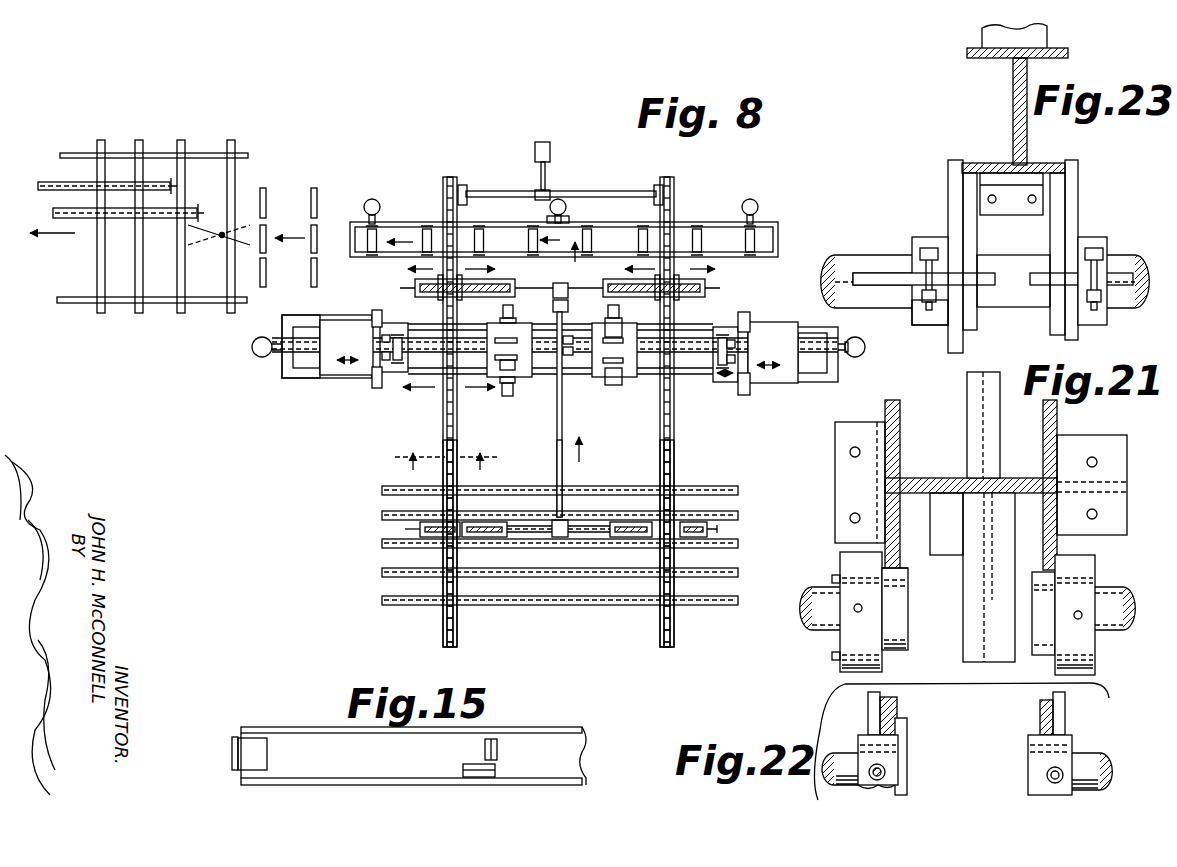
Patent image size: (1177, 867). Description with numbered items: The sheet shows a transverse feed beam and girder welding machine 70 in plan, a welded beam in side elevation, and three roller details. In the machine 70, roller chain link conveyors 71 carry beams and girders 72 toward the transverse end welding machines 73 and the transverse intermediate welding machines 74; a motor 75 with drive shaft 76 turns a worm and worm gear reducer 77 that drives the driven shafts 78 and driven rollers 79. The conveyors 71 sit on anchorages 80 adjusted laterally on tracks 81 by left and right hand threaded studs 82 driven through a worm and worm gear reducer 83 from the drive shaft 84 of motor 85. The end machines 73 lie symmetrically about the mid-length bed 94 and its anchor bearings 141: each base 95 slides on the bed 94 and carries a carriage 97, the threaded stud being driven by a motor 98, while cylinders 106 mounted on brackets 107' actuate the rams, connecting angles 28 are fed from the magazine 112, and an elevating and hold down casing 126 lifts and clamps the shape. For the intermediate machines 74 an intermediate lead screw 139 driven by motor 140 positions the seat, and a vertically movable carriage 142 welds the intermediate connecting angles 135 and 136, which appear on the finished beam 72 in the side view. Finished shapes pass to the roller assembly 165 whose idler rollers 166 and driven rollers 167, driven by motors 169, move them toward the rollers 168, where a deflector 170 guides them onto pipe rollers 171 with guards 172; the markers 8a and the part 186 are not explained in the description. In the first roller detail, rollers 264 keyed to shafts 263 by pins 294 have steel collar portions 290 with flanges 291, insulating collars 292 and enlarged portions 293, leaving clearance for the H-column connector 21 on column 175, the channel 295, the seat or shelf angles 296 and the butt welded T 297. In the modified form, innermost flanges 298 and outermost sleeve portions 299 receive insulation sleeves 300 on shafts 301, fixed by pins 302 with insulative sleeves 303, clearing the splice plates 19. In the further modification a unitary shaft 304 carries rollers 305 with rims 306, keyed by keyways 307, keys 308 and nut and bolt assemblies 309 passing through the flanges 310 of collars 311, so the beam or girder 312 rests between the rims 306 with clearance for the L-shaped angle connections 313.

In FIG. 8, the section line 8a is at (446, 468).
In FIG. 22, the splice plates 19 is at (870, 710).
In FIG. 21, the wide flange H-column connector 21 is at (938, 518).
In FIG. 15, the connecting angle 28 is at (250, 745).
In FIG. 8, the transverse feed beam and girder welding machine 70 is at (690, 172).
In FIG. 8, the roller chain link conveyors 71 is at (444, 623).
In FIG. 8, the beams and girders 72 is at (560, 578).
In FIG. 15, the beams and girders 72 is at (295, 740).
In FIG. 8, the transverse end welding machines 73 is at (322, 390).
In FIG. 8, the transverse intermediate welding machines 74 is at (645, 320).
In FIG. 8, the motor 75 is at (550, 145).
In FIG. 8, the drive shaft 76 is at (546, 180).
In FIG. 8, the worm and worm gear reducer 77 is at (552, 197).
In FIG. 8, the driven shafts 78 is at (485, 191).
In FIG. 8, the driven rollers 79 is at (458, 178).
In FIG. 8, the anchorages 80 is at (437, 302).
In FIG. 8, the tracks 81 is at (500, 288).
In FIG. 8, the left and right hand threaded studs 82 is at (535, 537).
In FIG. 8, the worm and worm gear reducer 83 is at (568, 290).
In FIG. 8, the drive shaft 84 is at (557, 465).
In FIG. 8, the motor 85 is at (570, 306).
In FIG. 8, the mid-length bed 94 is at (300, 378).
In FIG. 8, the base 95 is at (332, 376).
In FIG. 8, the carriage 97 is at (342, 334).
In FIG. 8, the motor 98 is at (262, 357).
In FIG. 8, the cylinders 106 is at (398, 337).
In FIG. 8, the bracket 107' is at (569, 377).
In FIG. 8, the magazine 112 is at (385, 378).
In FIG. 8, the elevating and hold down casing 126 is at (408, 378).
In FIG. 15, the connecting angle 135 is at (500, 750).
In FIG. 15, the connecting angle 136 is at (480, 777).
In FIG. 8, the intermediate lead screw 139 is at (841, 335).
In FIG. 8, the motor 140 is at (862, 348).
In FIG. 8, the anchor bearings 141 is at (567, 356).
In FIG. 8, the carriage 142 is at (503, 396).
In FIG. 8, the roller assembly 165 is at (690, 212).
In FIG. 8, the idler rollers 166 is at (481, 240).
In FIG. 8, the driven rollers 167 is at (383, 235).
In FIG. 8, the rollers 168 is at (268, 195).
In FIG. 8, the motors 169 is at (374, 199).
In FIG. 8, the deflector 170 is at (218, 230).
In FIG. 8, the pipe rollers 171 is at (181, 314).
In FIG. 8, the guards 172 is at (72, 152).
In FIG. 21, the column 175 is at (1058, 412).
In FIG. 22, the column 175 is at (900, 712).
In FIG. 8, the nut 186 is at (722, 358).
In FIG. 21, the shafts 263 is at (812, 590).
In FIG. 21, the rollers 264 is at (898, 627).
In FIG. 21, the collar portions 290 is at (905, 598).
In FIG. 21, the flanges 291 is at (895, 563).
In FIG. 21, the collars 292 is at (898, 652).
In FIG. 21, the enlarged portions 293 is at (840, 655).
In FIG. 21, the pins 294 is at (854, 608).
In FIG. 21, the channel 295 is at (998, 372).
In FIG. 21, the seat or shelf angles 296 is at (840, 508).
In FIG. 21, the butt welded T 297 is at (1070, 449).
In FIG. 22, the innermost flanges 298 is at (908, 735).
In FIG. 22, the outermost sleeve portions 299 is at (868, 736).
In FIG. 22, the insulation sleeves 300 is at (908, 748).
In FIG. 22, the shafts 301 is at (826, 782).
In FIG. 22, the pins 302 is at (880, 786).
In FIG. 22, the insulative sleeves 303 is at (886, 772).
In FIG. 23, the unitary shaft 304 is at (1010, 275).
In FIG. 23, the rollers 305 is at (1067, 215).
In FIG. 23, the rims 306 is at (1078, 190).
In FIG. 23, the keyways 307 is at (862, 273).
In FIG. 23, the keys 308 is at (946, 326).
In FIG. 23, the nut and bolt assemblies 309 is at (925, 248).
In FIG. 23, the flanges 310 is at (914, 255).
In FIG. 23, the collars 311 is at (940, 237).
In FIG. 23, the beam or girder 312 is at (1027, 85).
In FIG. 23, the L-shaped angle connections 313 is at (982, 38).